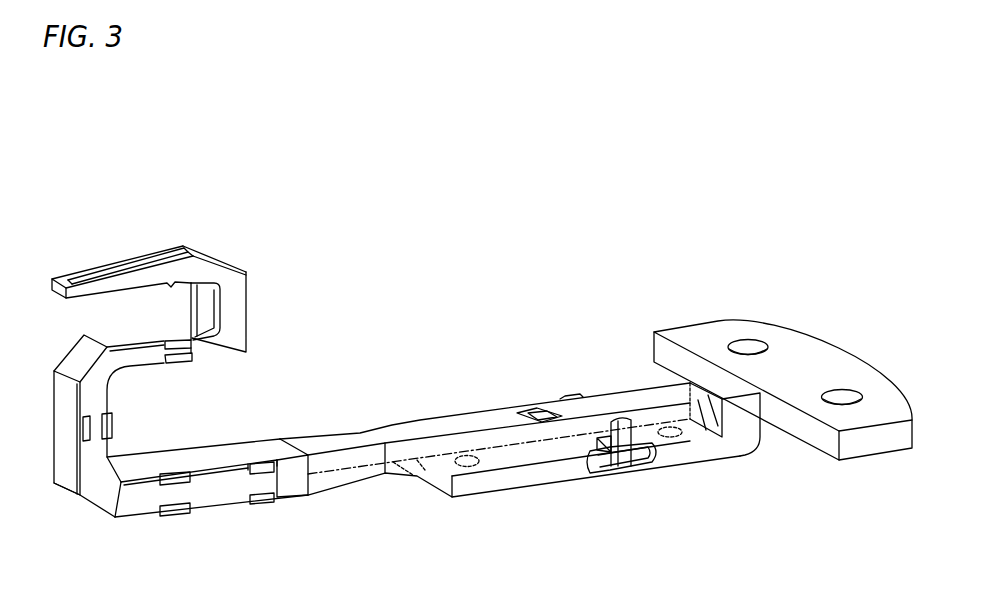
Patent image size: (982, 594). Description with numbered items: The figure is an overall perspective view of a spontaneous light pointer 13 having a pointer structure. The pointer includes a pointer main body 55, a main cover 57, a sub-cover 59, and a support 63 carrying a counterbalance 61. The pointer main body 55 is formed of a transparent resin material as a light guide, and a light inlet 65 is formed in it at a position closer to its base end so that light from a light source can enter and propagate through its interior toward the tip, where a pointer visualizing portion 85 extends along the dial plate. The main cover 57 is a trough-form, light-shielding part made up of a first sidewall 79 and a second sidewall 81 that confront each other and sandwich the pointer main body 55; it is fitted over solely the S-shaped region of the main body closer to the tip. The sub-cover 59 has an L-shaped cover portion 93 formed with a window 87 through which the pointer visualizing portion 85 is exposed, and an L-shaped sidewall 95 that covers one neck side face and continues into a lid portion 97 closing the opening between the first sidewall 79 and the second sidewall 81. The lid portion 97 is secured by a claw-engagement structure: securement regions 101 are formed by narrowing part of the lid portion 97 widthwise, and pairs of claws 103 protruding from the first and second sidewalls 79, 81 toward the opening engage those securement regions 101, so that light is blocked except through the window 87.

The spontaneous light pointer 13 is at (312, 177).
The pointer main body 55 is at (355, 470).
The main cover 57 is at (50, 474).
The sub-cover 59 is at (251, 270).
The counterbalance 61 is at (815, 350).
The support 63 is at (666, 458).
The light inlet 65 is at (543, 410).
The first sidewall 79 is at (63, 400).
The second sidewall 81 is at (147, 470).
The pointer visualizing portion 85 is at (170, 243).
The window 87 is at (137, 256).
The L-shaped cover portion 93 is at (213, 258).
The L-shaped sidewall 95 is at (236, 303).
The lid portion 97 is at (210, 462).
The securement regions 101 is at (96, 406).
The claws 103 is at (183, 340).